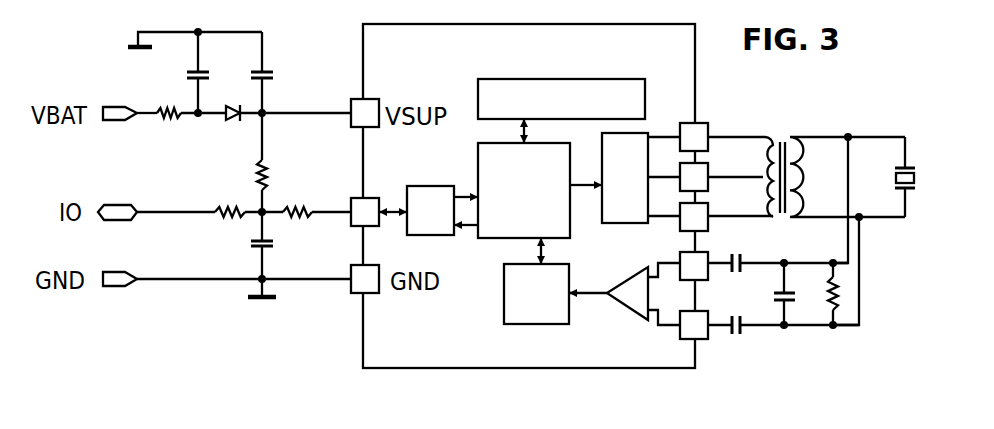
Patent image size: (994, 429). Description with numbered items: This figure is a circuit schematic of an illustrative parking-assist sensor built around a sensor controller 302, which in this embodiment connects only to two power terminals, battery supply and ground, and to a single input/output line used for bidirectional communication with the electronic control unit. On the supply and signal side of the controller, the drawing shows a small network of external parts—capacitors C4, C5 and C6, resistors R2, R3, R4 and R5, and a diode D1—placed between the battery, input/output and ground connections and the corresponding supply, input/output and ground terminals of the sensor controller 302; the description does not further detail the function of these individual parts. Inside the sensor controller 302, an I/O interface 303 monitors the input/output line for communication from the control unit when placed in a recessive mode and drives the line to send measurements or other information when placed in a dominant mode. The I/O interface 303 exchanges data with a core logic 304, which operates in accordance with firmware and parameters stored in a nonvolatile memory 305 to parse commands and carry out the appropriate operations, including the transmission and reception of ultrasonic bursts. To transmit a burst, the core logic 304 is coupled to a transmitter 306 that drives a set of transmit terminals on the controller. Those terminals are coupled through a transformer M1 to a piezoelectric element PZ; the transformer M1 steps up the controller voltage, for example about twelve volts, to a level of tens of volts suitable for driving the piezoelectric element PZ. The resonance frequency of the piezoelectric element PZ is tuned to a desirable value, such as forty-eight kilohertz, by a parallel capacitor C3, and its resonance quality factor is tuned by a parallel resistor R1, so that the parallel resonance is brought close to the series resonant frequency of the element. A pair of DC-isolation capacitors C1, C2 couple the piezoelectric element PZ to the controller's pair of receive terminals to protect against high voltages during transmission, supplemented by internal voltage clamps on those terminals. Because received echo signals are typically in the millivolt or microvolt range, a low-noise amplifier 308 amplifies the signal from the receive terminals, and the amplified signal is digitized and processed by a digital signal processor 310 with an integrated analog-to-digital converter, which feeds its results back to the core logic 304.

The sensor controller 302 is at (415, 368).
The I/O interface 303 is at (422, 184).
The core logic 304 is at (477, 175).
The nonvolatile memory 305 is at (477, 93).
The transmitter 306 is at (631, 226).
The low-noise amplifier 308 is at (632, 313).
The digital signal processor 310 is at (505, 313).
The transformer M1 is at (806, 161).
The piezoelectric element PZ is at (920, 177).
The DC-isolation capacitor C1 is at (778, 278).
The DC-isolation capacitor C2 is at (783, 342).
The parallel capacitor C3 is at (776, 294).
The capacitor C4 is at (184, 72).
The capacitor C5 is at (249, 72).
The capacitor C6 is at (247, 245).
The parallel resistor R1 is at (818, 294).
The resistor R2 is at (170, 98).
The resistor R3 is at (297, 196).
The resistor R4 is at (244, 162).
The resistor R5 is at (219, 196).
The diode D1 is at (226, 99).